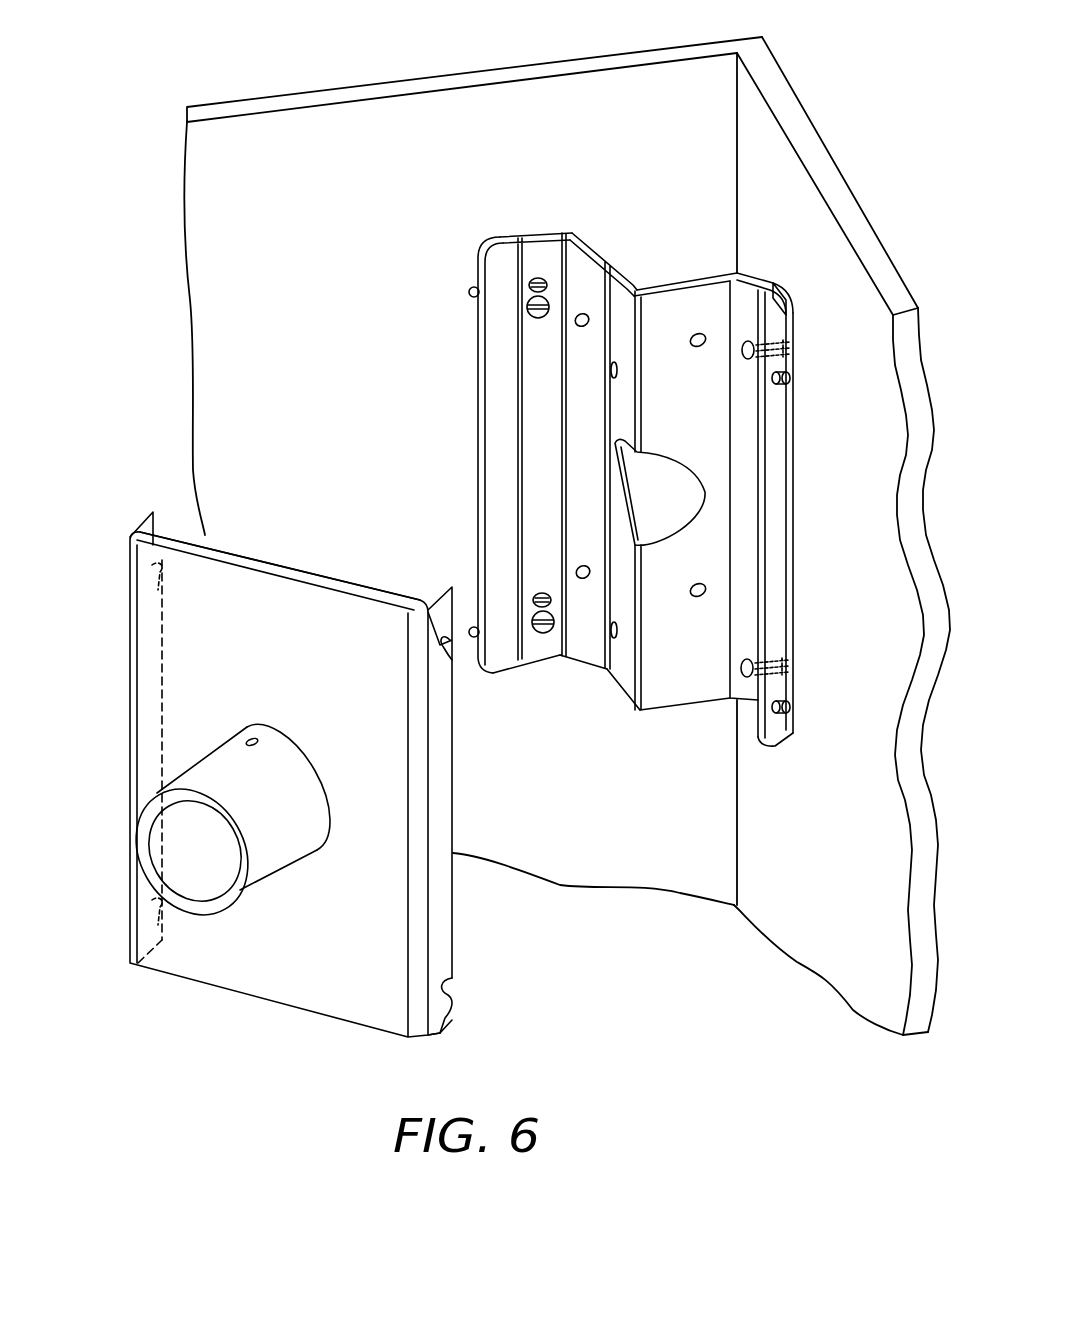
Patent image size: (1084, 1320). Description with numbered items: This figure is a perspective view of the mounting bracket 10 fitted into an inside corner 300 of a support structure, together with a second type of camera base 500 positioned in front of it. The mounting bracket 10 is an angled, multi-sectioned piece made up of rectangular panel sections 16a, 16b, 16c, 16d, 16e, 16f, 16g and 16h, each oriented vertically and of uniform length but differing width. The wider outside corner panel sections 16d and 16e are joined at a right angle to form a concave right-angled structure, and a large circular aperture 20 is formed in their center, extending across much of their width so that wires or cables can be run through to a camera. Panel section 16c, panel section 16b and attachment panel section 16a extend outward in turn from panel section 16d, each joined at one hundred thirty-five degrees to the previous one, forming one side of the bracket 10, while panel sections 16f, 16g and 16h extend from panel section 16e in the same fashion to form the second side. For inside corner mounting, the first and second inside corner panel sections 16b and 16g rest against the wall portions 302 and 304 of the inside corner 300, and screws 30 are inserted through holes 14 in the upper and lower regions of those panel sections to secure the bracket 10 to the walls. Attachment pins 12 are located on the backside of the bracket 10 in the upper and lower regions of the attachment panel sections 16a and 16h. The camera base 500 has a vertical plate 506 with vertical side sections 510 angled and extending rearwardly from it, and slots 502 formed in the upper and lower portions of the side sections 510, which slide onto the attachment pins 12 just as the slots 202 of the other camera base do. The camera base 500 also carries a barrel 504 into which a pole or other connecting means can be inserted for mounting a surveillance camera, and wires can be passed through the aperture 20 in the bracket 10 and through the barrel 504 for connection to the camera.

The mounting bracket 10 is at (652, 524).
The attachment pins 12 is at (470, 292).
The holes 14 is at (617, 353).
The attachment panel section 16a is at (503, 672).
The first inside corner panel section 16b is at (538, 658).
The panel section 16c is at (583, 660).
The outside corner panel section 16d is at (617, 690).
The outside corner panel section 16e is at (676, 708).
The panel section 16f is at (750, 705).
The second inside corner panel section 16g is at (787, 300).
The attachment panel section 16h is at (780, 745).
The circular aperture 20 is at (705, 487).
The screws 30 is at (532, 305).
The slots 202 is at (446, 592).
The inside corner 300 is at (783, 95).
The wall portion 302 is at (575, 90).
The wall portion 304 is at (795, 160).
The camera base 500 is at (330, 750).
The slots 502 is at (160, 575).
The barrel 504 is at (184, 797).
The vertical plate 506 is at (232, 580).
The vertical side sections 510 is at (135, 530).